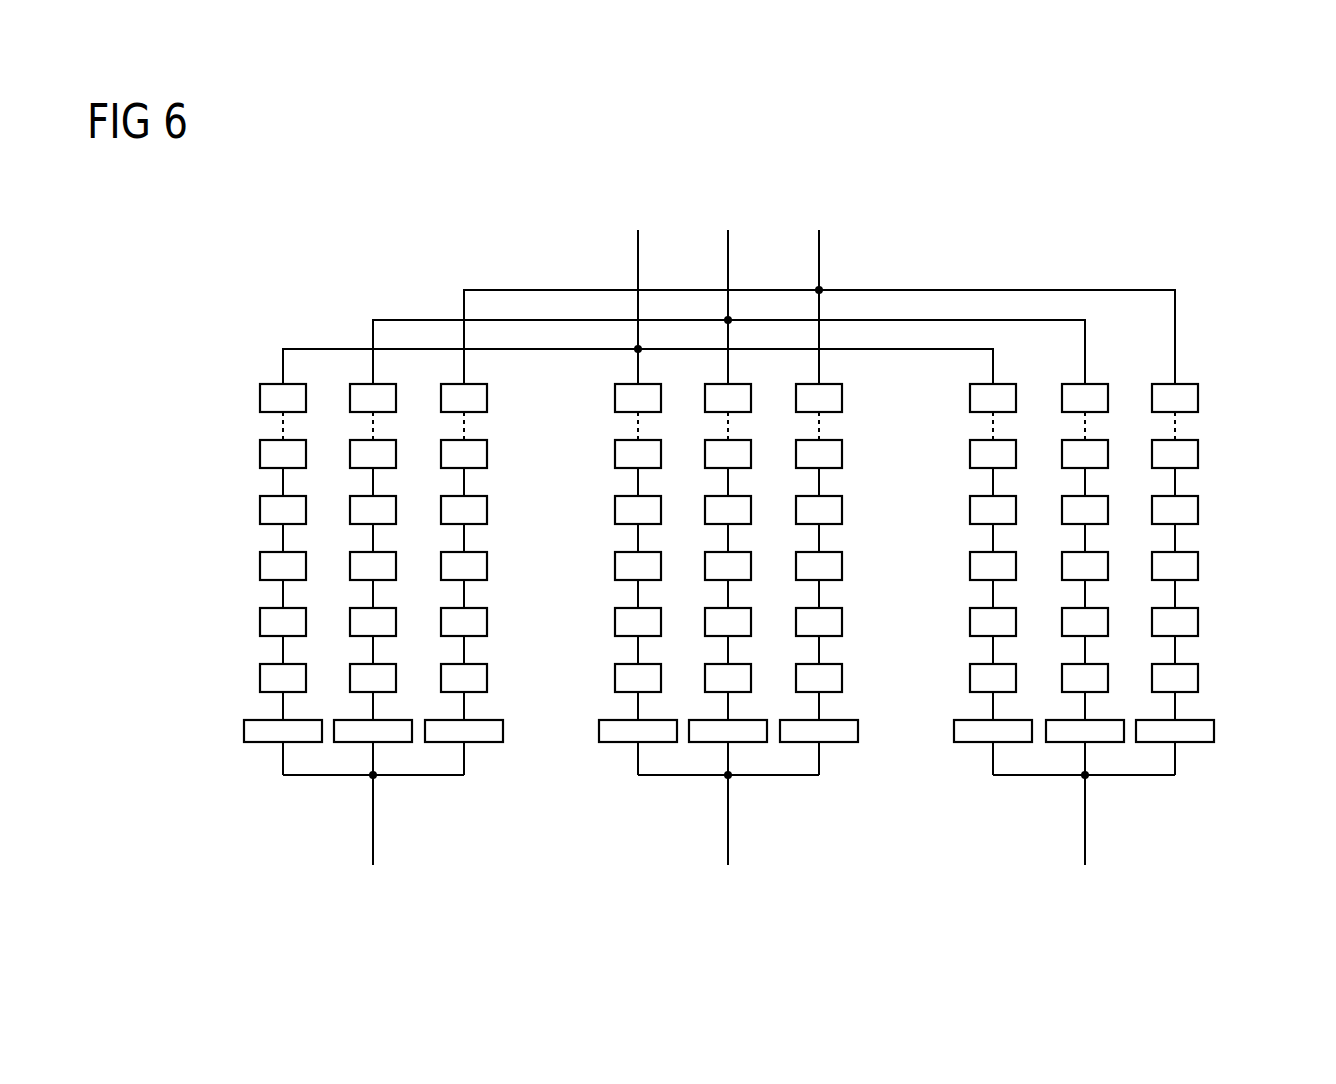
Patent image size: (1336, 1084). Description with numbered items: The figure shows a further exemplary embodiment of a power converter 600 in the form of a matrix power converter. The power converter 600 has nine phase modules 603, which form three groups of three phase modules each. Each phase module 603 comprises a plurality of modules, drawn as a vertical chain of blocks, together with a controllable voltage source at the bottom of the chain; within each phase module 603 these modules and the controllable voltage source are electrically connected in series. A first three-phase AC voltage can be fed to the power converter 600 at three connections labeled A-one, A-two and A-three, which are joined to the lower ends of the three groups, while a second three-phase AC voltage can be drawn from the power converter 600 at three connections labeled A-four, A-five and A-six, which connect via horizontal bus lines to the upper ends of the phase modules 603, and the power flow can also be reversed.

The power converter 600 is at (1167, 262).
The phase module 603 is at (982, 747).